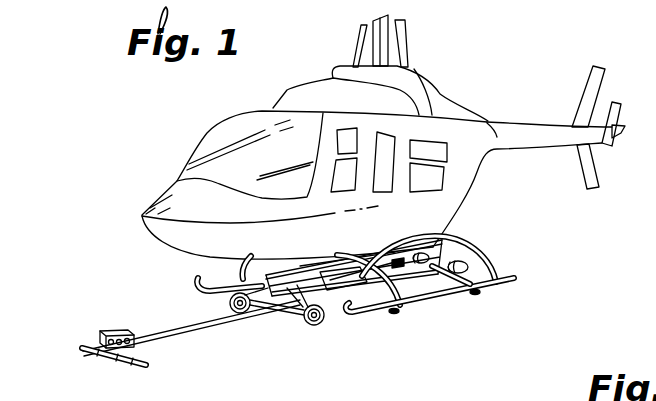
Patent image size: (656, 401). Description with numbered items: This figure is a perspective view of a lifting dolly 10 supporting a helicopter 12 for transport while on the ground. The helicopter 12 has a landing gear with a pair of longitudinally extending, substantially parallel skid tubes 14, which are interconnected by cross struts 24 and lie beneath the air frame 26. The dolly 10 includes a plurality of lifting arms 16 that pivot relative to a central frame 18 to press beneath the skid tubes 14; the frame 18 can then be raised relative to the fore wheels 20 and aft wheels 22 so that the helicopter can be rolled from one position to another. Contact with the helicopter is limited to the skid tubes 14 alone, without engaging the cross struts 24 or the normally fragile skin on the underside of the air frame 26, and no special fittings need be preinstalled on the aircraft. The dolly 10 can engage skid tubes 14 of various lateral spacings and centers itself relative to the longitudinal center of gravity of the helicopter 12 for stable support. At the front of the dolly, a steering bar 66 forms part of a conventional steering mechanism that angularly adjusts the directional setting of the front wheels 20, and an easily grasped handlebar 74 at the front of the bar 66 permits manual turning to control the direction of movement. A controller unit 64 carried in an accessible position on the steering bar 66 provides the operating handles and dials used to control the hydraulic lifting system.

The lifting dolly 10 is at (346, 321).
The helicopter 12 is at (473, 79).
The skid tubes 14 is at (203, 278).
The lifting arms 16 is at (257, 278).
The central frame 18 is at (398, 252).
The fore wheels 20 is at (230, 302).
The aft wheels 22 is at (448, 262).
The cross struts 24 is at (350, 256).
The air frame 26 is at (468, 193).
The controller unit 64 is at (114, 312).
The steering bar 66 is at (205, 336).
The handlebar 74 is at (118, 365).